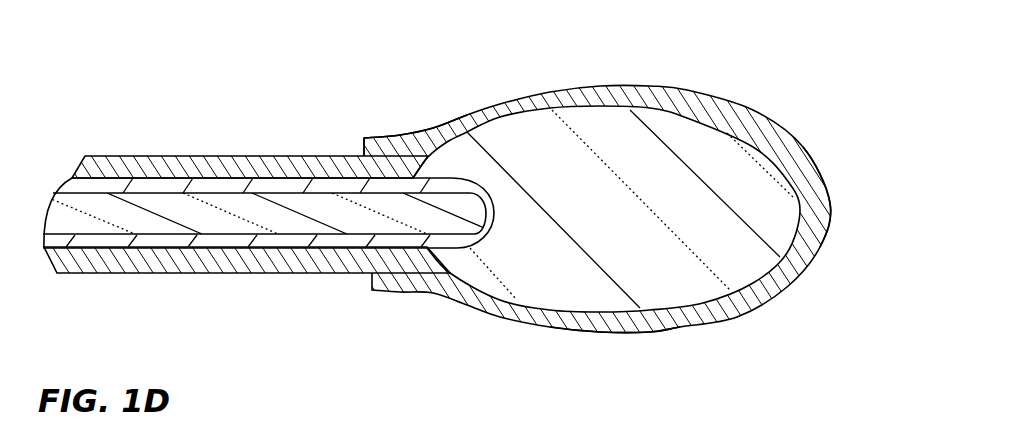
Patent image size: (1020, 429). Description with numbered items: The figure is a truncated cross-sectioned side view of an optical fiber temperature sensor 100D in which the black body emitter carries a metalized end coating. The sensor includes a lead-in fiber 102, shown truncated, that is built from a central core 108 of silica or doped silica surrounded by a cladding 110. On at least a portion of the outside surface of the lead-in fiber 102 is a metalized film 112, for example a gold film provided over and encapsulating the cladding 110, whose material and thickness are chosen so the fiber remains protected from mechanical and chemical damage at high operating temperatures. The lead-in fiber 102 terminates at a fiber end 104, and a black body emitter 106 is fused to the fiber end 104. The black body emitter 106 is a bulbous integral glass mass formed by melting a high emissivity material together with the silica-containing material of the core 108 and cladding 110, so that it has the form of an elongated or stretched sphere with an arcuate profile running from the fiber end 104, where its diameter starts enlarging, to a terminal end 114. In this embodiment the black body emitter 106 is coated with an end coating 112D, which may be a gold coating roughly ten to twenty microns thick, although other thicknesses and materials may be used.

The optical fiber temperature sensor 100D is at (745, 72).
The lead-in fiber 102 is at (221, 150).
The fiber end 104 is at (404, 118).
The black body emitter 106 is at (636, 342).
The core 108 is at (352, 235).
The cladding 110 is at (228, 248).
The metalized film 112 is at (131, 275).
The end coating 112D is at (703, 323).
The terminal end 114 is at (828, 195).